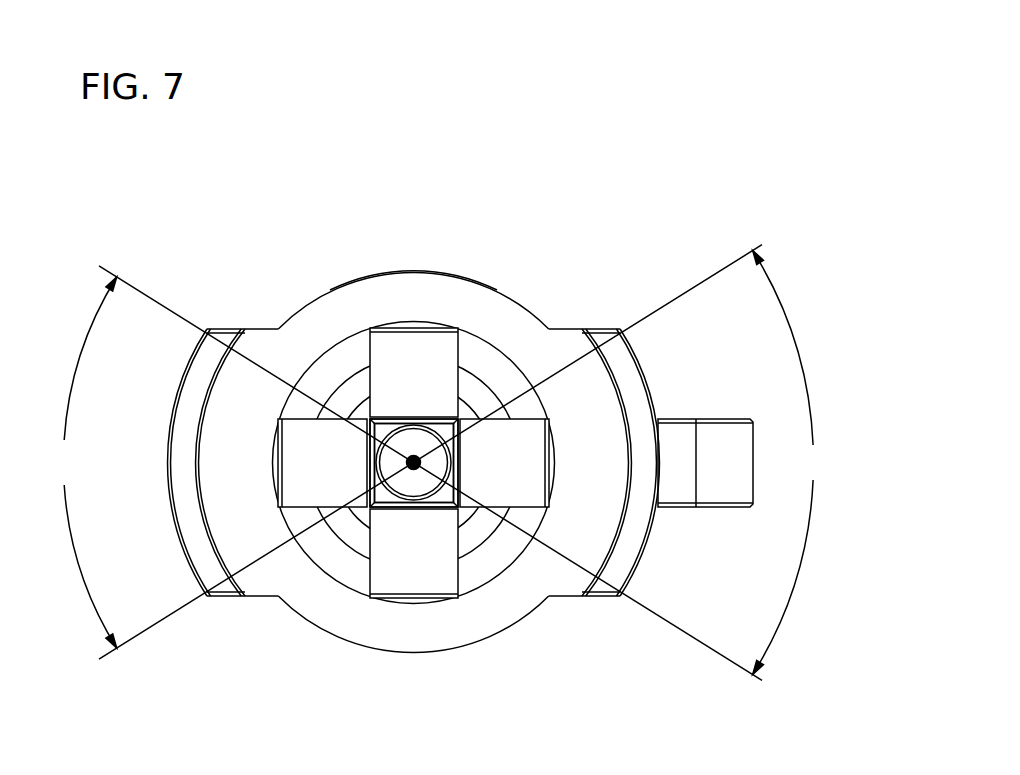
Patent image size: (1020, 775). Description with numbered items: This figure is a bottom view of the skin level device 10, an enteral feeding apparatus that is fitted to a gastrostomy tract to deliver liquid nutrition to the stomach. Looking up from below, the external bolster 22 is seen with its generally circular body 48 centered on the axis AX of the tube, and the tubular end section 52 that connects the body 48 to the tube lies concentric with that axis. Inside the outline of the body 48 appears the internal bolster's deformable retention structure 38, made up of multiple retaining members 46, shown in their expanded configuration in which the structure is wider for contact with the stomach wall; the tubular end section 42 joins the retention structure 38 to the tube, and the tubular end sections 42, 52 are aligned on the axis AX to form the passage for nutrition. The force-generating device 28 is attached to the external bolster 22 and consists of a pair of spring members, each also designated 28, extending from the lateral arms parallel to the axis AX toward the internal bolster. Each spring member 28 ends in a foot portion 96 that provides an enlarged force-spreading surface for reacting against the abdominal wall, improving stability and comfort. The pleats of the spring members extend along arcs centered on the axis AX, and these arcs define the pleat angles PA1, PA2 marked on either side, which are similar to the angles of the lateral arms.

The skin level device 10 is at (672, 166).
The external bolster 22 is at (538, 304).
The force-generating device 28 is at (175, 403).
The deformable retention structure 38 is at (545, 409).
The tubular end section 42 is at (458, 507).
The tubular end section 52 is at (458, 507).
The retaining members 46 is at (310, 418).
The circular body 48 is at (421, 272).
The foot portion 96 is at (197, 370).
The axis AX is at (414, 463).
The pleat angle PA1 is at (402, 463).
The pleat angle PA2 is at (794, 463).